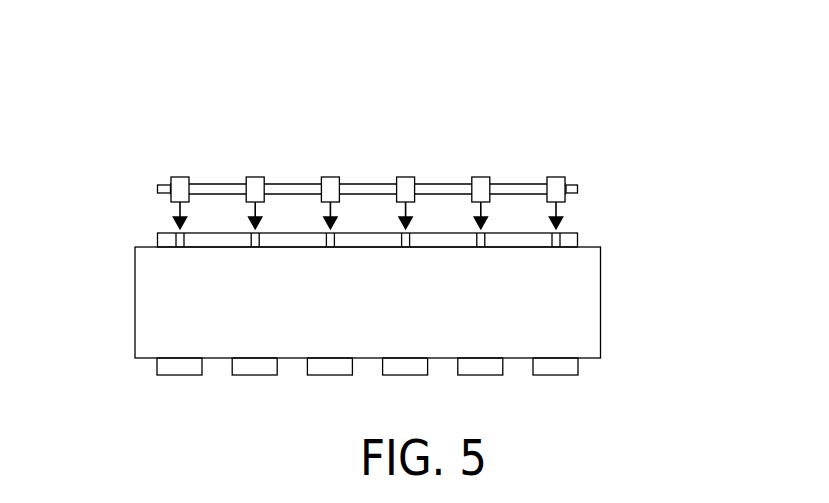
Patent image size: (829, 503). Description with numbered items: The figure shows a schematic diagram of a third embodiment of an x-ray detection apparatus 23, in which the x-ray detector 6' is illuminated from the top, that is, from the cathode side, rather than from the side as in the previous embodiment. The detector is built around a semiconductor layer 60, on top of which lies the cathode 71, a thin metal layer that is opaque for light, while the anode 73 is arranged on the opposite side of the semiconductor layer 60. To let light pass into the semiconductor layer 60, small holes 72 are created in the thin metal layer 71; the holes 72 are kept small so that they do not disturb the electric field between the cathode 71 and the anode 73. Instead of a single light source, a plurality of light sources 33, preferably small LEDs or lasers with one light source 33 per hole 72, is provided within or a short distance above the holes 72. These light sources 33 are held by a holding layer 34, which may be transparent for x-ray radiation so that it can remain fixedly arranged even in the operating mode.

The detection apparatus 23 is at (178, 73).
The light sources 33 is at (255, 177).
The holding layer 34 is at (165, 185).
The x-ray detector 6' is at (456, 293).
The semiconductor layer 60 is at (600, 300).
The cathode 71 is at (578, 242).
The holes 72 is at (255, 247).
The anode 73 is at (578, 375).